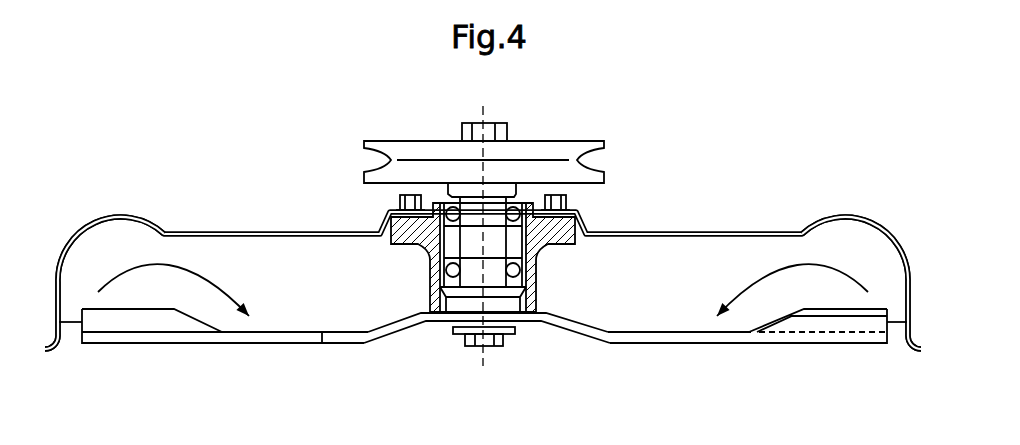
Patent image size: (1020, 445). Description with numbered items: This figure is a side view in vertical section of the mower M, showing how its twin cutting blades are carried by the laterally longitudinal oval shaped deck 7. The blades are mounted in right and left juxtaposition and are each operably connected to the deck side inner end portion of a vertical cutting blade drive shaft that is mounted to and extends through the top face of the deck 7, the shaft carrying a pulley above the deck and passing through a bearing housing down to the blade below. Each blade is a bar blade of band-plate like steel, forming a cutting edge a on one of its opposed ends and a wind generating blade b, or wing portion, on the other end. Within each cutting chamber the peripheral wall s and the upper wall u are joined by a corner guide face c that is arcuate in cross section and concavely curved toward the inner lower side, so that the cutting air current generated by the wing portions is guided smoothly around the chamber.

The deck 7 is at (325, 233).
The corner guide face c is at (78, 245).
The mower M is at (694, 203).
The cutting edge a is at (253, 346).
The wind generating blade b is at (167, 320).
The peripheral wall s is at (83, 324).
The upper wall u is at (249, 238).